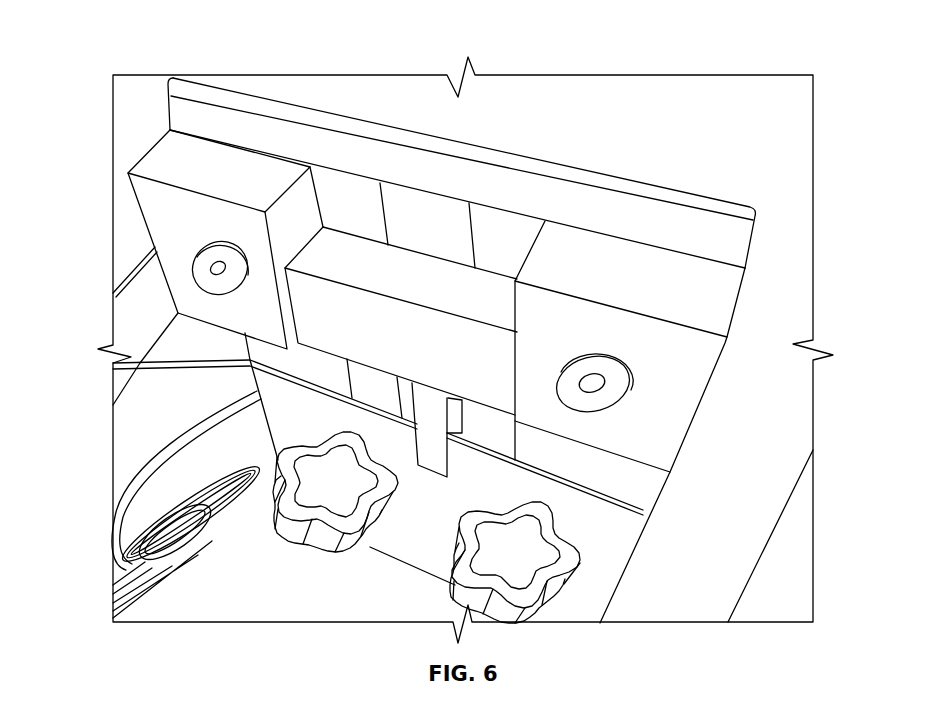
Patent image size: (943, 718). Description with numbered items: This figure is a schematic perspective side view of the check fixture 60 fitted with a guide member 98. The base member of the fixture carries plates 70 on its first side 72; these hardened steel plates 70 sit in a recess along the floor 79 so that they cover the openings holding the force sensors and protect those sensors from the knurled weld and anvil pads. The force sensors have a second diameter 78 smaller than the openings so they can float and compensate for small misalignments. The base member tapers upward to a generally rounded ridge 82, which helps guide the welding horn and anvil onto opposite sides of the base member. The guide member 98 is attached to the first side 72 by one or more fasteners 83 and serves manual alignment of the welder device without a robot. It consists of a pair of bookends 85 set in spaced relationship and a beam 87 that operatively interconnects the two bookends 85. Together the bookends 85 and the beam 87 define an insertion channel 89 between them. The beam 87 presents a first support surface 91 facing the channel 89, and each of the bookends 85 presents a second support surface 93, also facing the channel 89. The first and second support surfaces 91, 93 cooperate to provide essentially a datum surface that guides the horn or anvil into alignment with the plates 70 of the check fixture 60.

The check fixture 60 is at (151, 58).
The plates 70 is at (335, 200).
The first side 72 is at (637, 230).
The second diameter 78 is at (640, 486).
The floor 79 is at (585, 463).
The ridge 82 is at (512, 250).
The fasteners 83 is at (196, 263).
The bookends 85 is at (162, 160).
The beam 87 is at (386, 348).
The insertion channel 89 is at (398, 208).
The first support surface 91 is at (418, 268).
The second support surface 93 is at (292, 205).
The guide member 98 is at (155, 200).